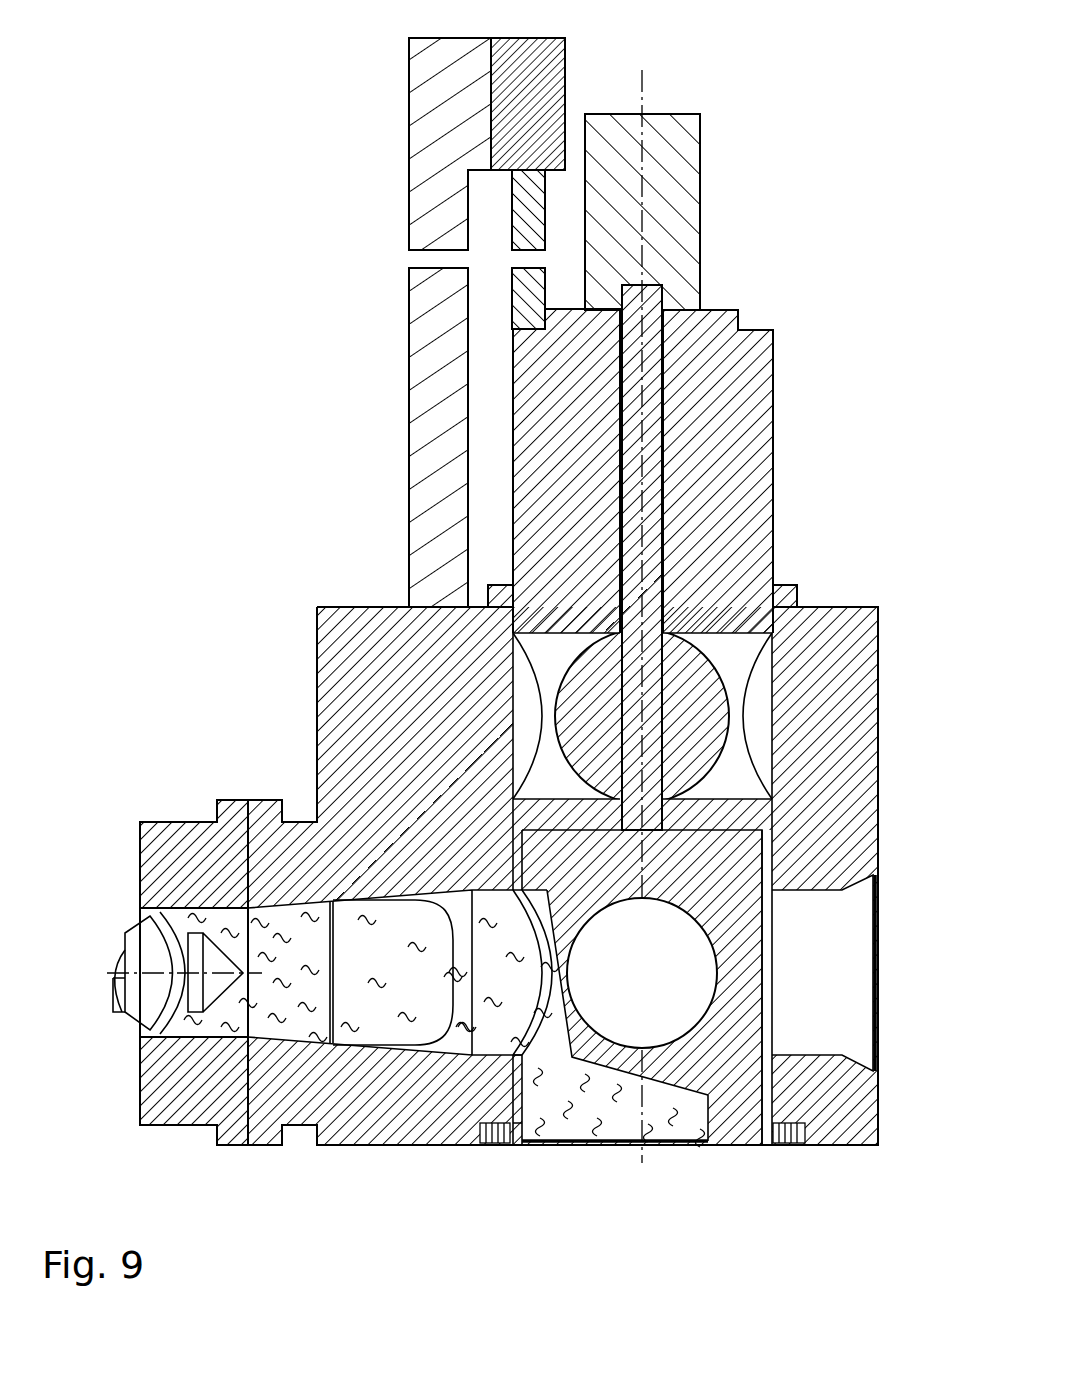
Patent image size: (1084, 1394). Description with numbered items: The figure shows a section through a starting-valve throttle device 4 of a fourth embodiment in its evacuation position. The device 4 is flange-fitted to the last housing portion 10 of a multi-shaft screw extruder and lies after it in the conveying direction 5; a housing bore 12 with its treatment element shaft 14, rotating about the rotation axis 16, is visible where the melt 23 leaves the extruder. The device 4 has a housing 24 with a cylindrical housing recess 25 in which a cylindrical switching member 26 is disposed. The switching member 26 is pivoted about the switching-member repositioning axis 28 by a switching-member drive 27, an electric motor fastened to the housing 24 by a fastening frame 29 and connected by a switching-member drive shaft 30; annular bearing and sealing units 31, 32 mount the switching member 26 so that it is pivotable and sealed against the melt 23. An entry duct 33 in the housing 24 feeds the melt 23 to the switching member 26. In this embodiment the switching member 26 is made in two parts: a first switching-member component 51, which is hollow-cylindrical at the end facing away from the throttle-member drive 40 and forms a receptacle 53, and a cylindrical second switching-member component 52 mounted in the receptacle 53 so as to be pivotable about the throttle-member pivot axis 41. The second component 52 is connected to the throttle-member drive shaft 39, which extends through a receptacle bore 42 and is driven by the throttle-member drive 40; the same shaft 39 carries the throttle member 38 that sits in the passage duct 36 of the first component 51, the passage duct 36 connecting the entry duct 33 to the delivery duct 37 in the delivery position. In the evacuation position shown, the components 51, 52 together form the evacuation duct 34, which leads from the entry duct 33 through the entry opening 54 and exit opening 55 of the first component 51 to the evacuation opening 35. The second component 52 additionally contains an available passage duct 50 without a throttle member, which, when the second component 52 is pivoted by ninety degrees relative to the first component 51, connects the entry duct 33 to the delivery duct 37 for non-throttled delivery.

The starting-valve throttle device 4 is at (886, 649).
The conveying direction 5 is at (182, 782).
The housing portion 10 is at (153, 865).
The housing bore 12 is at (185, 912).
The treatment element shaft 14 is at (140, 987).
The rotation axis 16 is at (146, 955).
The melt 23 is at (277, 1020).
The housing 24 is at (868, 830).
The housing recess 25 is at (762, 1143).
The switching member 26 is at (782, 374).
The switching-member drive 27 is at (498, 93).
The switching-member repositioning axis 28 is at (655, 1115).
The fastening frame 29 is at (420, 157).
The switching-member drive shaft 30 is at (520, 303).
The bearing and sealing unit 31 is at (795, 592).
The bearing and sealing unit 32 is at (488, 1130).
The entry duct 33 is at (362, 1033).
The evacuation duct 34 is at (533, 1127).
The evacuation opening 35 is at (693, 1140).
The passage duct 36 is at (735, 695).
The delivery duct 37 is at (832, 1005).
The throttle member 38 is at (730, 766).
The throttle-member drive shaft 39 is at (655, 518).
The throttle-member drive 40 is at (692, 240).
The throttle-member pivot axis 41 is at (645, 172).
The receptacle bore 42 is at (666, 440).
The available passage duct 50 is at (693, 938).
The first switching-member component 51 is at (770, 557).
The second switching-member component 52 is at (747, 1042).
The receptacle 53 is at (772, 1080).
The entry opening 54 is at (520, 1020).
The exit opening 55 is at (768, 975).